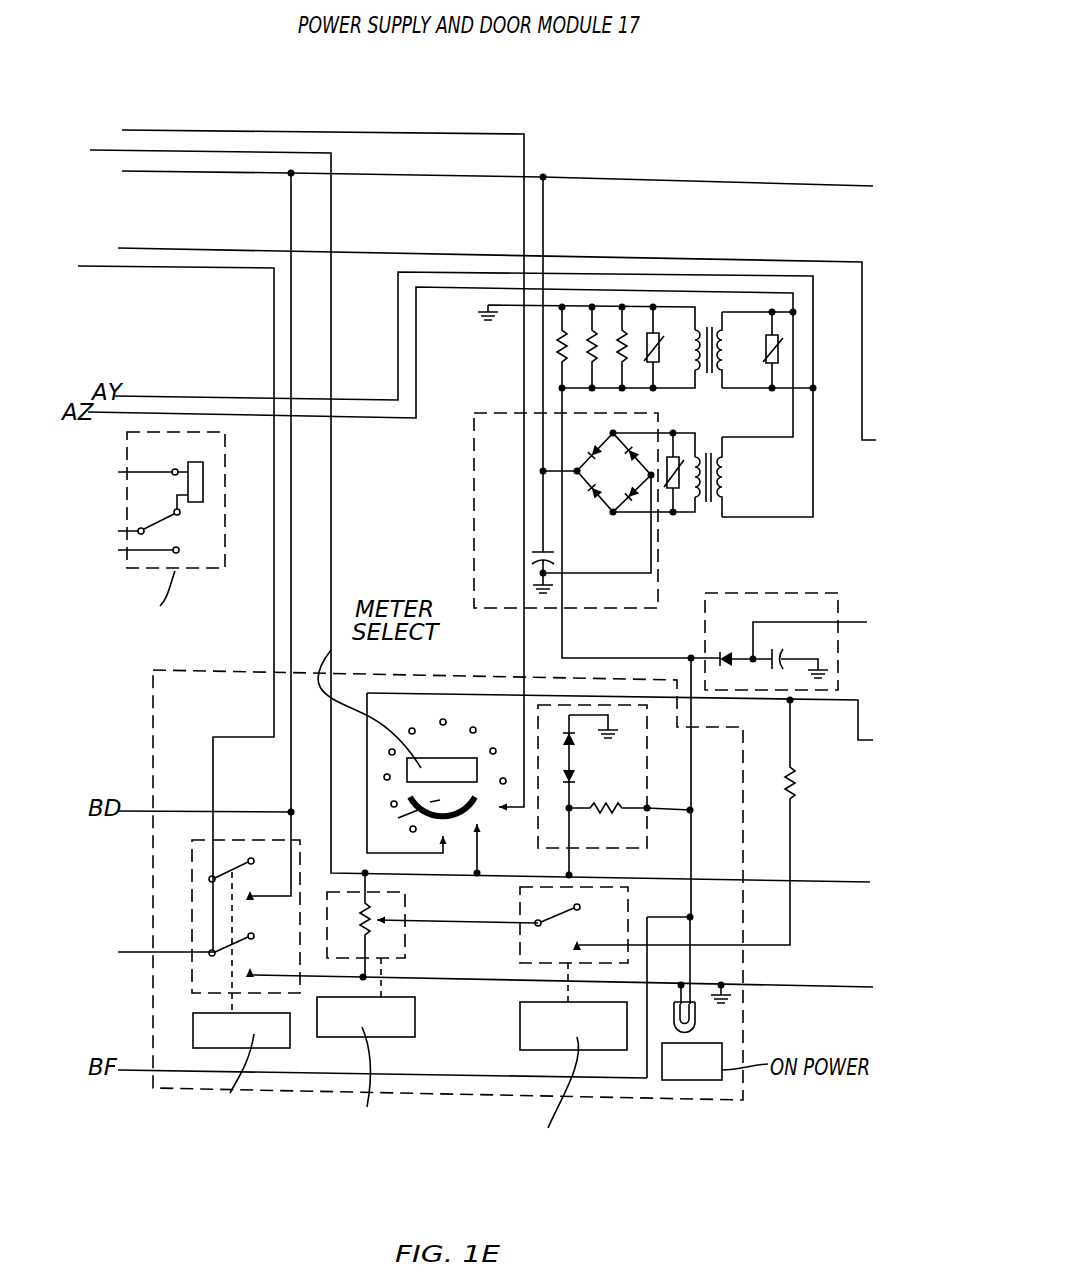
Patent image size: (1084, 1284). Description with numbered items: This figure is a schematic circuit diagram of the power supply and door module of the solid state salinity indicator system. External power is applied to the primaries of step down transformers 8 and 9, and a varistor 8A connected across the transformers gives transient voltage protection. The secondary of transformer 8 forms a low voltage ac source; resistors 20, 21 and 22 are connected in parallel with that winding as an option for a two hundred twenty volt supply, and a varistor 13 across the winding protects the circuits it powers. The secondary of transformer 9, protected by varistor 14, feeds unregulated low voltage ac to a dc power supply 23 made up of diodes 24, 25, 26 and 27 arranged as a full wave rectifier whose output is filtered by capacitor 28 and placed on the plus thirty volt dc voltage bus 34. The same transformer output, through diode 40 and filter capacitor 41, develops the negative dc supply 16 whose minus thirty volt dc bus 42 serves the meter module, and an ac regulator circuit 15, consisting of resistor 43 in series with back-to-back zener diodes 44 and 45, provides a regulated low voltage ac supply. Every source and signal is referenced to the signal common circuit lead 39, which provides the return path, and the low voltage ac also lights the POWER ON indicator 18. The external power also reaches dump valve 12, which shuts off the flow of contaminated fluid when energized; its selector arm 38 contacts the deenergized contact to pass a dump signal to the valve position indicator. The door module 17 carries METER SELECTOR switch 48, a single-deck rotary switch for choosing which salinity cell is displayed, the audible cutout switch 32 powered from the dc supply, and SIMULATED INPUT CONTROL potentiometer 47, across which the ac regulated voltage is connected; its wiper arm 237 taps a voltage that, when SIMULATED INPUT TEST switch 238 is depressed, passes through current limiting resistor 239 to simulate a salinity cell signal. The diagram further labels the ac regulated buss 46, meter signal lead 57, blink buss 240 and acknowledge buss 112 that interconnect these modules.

The door module 17 is at (487, 656).
The AC regulated buss 46 is at (337, 157).
The meter signal line 57 is at (376, 133).
The dc voltage bus 34 is at (437, 184).
The blink buss 240 is at (410, 244).
The acknowledge buss 112 is at (263, 272).
The resistor 20 is at (569, 343).
The resistor 21 is at (599, 343).
The resistor 22 is at (629, 343).
The varistor 13 is at (661, 343).
The step down transformer 8 is at (710, 326).
The varistor 8A is at (758, 343).
The dc power supply 23 is at (492, 411).
The diode 27 is at (634, 469).
The diode 24 is at (594, 450).
The diode 25 is at (641, 446).
The diode 26 is at (591, 500).
The capacitor 28 is at (530, 555).
The varistor 14 is at (683, 452).
The step down transformer 9 is at (712, 450).
The dump valve 12 is at (230, 461).
The selector arm 38 is at (146, 520).
The negative dc supply 16 is at (803, 589).
The diode 40 is at (727, 648).
The filter capacitor 41 is at (773, 674).
The −30 vdc bus 42 is at (861, 620).
The METER SELECTOR switch 48 is at (429, 756).
The ac regulator circuit 15 is at (650, 762).
The zener diode 44 is at (582, 742).
The zener diode 45 is at (586, 776).
The resistor 43 is at (618, 813).
The current limiting resistor 239 is at (801, 782).
The wiper arm 237 is at (360, 925).
The POWER ON indicator 18 is at (671, 1013).
The signal common circuit lead 39 is at (832, 983).
The audible cutout switch 32 is at (195, 1031).
The SIMULATED INPUT CONTROL potentiometer 47 is at (420, 1027).
The SIMULATED INPUT TEST switch 238 is at (606, 1051).